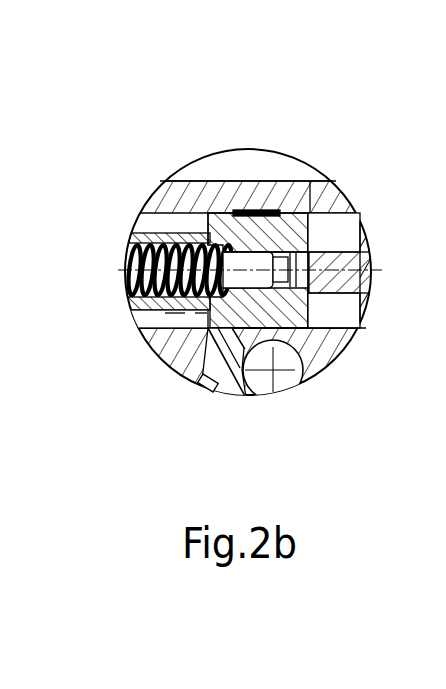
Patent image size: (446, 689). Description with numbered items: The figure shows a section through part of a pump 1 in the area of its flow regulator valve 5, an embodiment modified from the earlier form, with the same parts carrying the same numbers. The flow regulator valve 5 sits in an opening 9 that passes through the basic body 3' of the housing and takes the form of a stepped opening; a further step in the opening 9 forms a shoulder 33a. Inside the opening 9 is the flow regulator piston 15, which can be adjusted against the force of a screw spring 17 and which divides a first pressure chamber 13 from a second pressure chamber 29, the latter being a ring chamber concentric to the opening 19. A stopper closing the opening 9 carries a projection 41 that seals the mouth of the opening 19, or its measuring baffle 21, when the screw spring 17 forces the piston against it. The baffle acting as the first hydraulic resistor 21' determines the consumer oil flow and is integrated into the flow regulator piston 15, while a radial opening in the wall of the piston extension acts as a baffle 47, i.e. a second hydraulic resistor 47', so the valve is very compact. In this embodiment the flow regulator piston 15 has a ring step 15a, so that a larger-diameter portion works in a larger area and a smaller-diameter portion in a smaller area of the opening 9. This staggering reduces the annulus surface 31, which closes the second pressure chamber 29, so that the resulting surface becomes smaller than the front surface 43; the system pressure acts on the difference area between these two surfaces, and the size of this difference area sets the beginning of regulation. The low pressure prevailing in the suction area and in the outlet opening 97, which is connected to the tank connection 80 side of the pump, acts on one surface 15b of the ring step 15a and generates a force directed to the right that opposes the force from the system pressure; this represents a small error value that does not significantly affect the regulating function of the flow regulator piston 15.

The pump 1 is at (229, 160).
The basic body 3' is at (235, 261).
The flow regulator valve 5 is at (203, 218).
The opening 9 is at (188, 210).
The first pressure chamber 13 is at (348, 303).
The flow regulator piston 15 is at (295, 230).
The ring step 15a is at (279, 204).
The surface of the ring stage 15b is at (254, 343).
The screw spring 17 is at (128, 288).
The opening 19 is at (143, 311).
The measuring baffle 21 is at (368, 195).
The first hydraulic resistor 21' is at (334, 310).
The second pressure chamber 29 is at (205, 320).
The annulus surface 31 is at (173, 318).
The shoulder 33a is at (252, 210).
The projection 41 is at (364, 237).
The front surface 43 is at (350, 334).
The baffle 47 is at (106, 225).
The spring seat disc 47' is at (164, 303).
The tank connection 80 is at (306, 376).
The outlet opening 97 is at (213, 393).